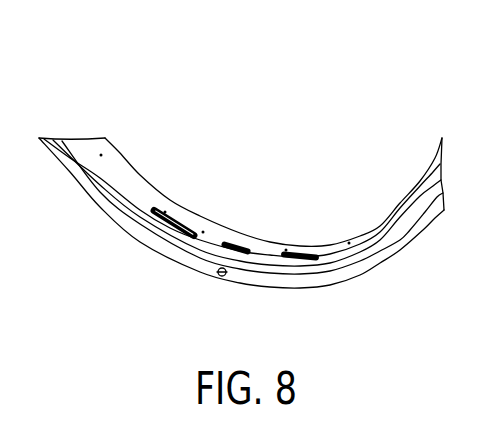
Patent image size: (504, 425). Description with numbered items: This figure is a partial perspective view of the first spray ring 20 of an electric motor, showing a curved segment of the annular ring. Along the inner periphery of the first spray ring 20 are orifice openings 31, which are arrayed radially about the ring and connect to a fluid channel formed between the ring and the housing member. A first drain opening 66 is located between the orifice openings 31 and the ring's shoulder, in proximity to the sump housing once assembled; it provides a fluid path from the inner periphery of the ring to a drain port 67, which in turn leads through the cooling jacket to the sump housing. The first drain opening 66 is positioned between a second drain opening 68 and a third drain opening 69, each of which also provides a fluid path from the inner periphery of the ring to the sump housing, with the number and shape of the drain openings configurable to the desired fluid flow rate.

The first spray ring 20 is at (241, 148).
The orifice openings 31 is at (130, 189).
The first drain opening 66 is at (237, 243).
The drain port 67 is at (222, 277).
The second drain opening 68 is at (182, 223).
The third drain opening 69 is at (303, 253).